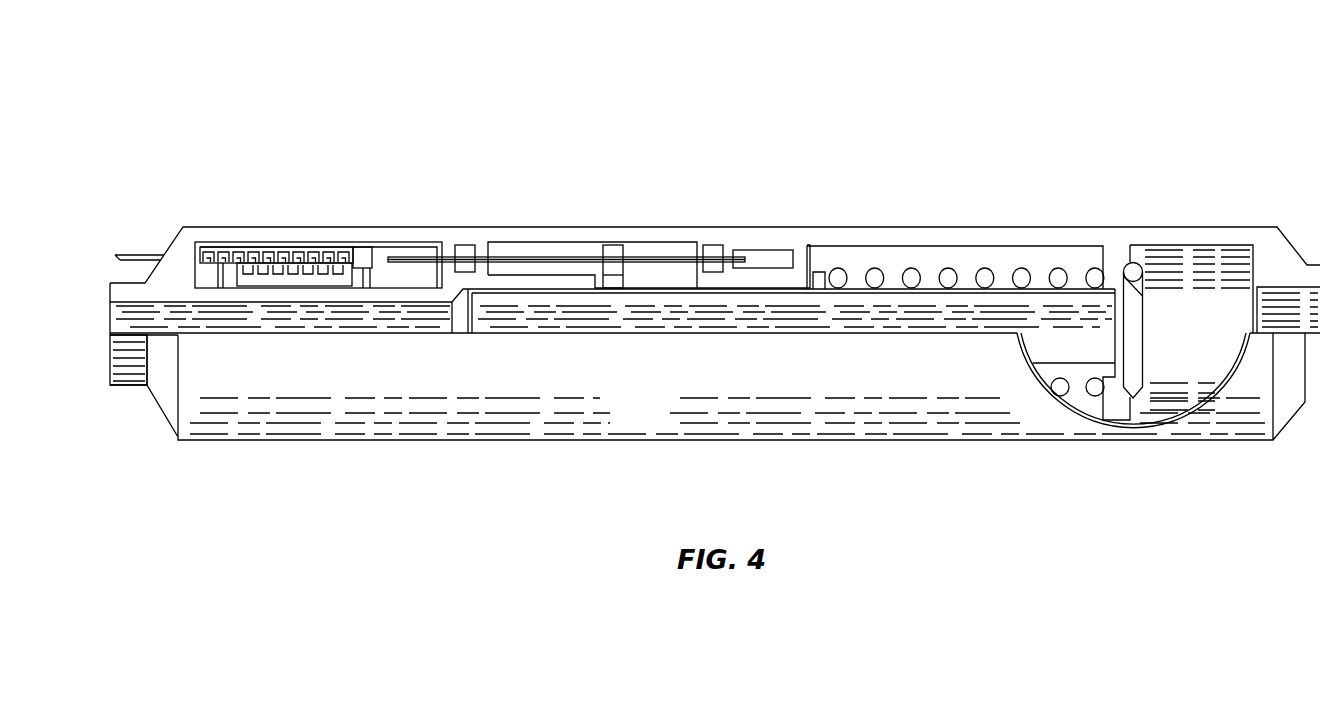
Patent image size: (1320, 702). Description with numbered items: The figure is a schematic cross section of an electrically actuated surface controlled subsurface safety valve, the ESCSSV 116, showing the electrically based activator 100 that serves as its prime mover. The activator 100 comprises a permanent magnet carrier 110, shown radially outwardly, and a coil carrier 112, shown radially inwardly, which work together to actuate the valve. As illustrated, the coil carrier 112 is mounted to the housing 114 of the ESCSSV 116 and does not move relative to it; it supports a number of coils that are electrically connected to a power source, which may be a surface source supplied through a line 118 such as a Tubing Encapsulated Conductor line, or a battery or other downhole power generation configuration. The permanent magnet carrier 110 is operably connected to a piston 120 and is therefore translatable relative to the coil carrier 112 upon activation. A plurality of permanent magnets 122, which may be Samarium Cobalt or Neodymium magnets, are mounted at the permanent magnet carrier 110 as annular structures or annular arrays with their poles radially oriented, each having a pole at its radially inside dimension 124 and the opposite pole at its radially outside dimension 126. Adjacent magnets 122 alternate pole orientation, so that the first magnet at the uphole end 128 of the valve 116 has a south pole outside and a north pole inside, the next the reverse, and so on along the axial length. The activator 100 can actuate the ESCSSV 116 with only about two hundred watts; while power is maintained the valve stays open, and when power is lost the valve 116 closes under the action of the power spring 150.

The activator 100 is at (259, 101).
The permanent magnet carrier 110 is at (352, 249).
The coil carrier 112 is at (262, 280).
The housing 114 is at (405, 295).
The ESCSSV 116 is at (868, 186).
The line 118 is at (138, 252).
The piston 120 is at (434, 247).
The permanent magnets 122 is at (326, 258).
The radially inside dimension 124 is at (210, 262).
The radially outside dimension 126 is at (210, 258).
The uphole end 128 is at (110, 358).
The power spring 150 is at (947, 278).